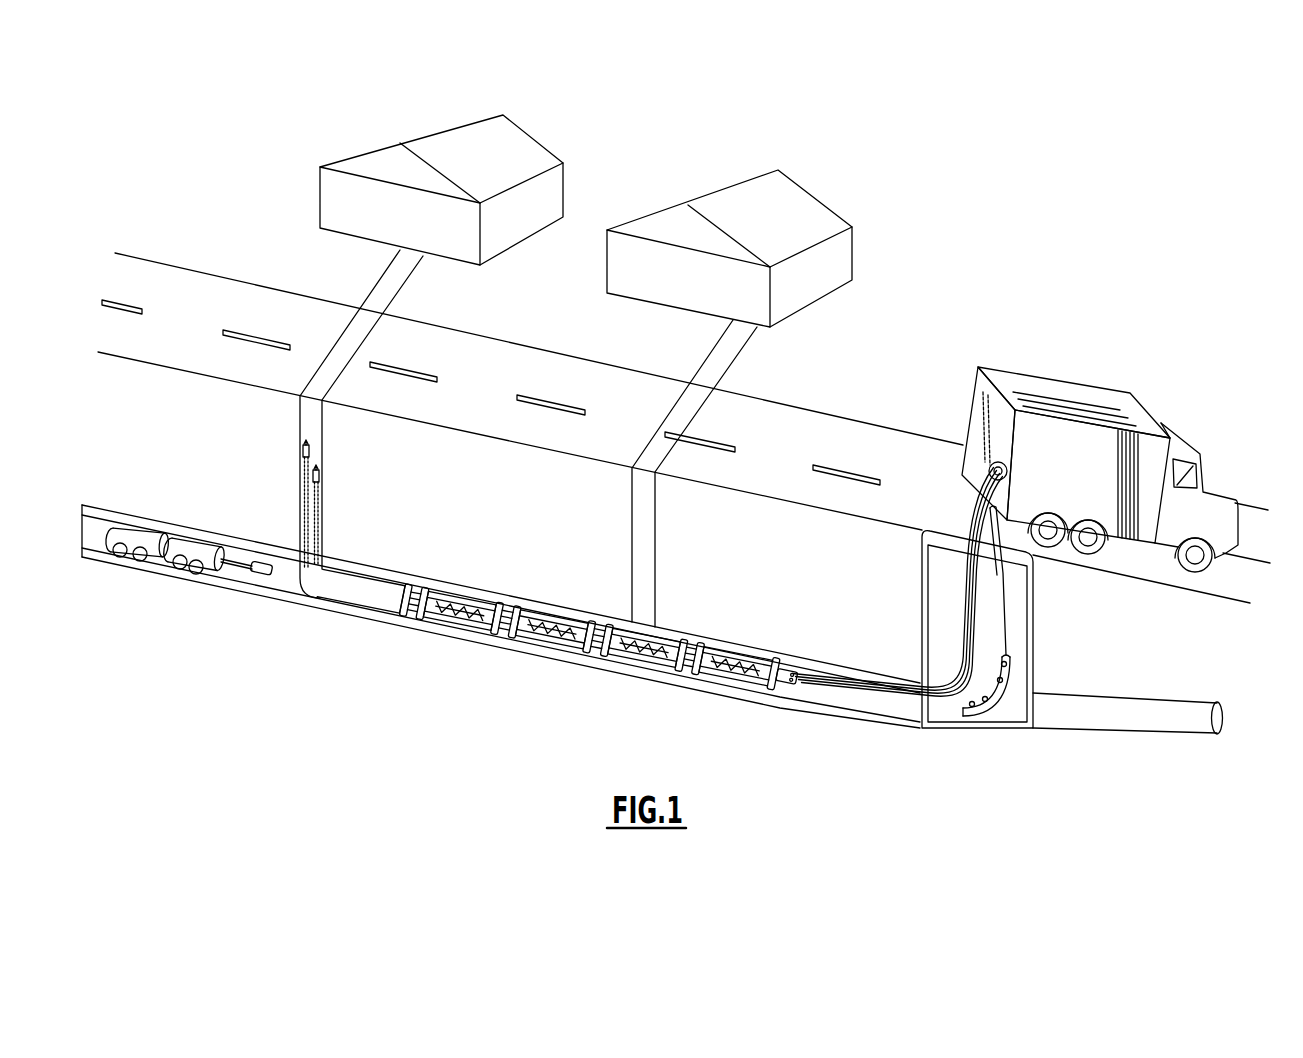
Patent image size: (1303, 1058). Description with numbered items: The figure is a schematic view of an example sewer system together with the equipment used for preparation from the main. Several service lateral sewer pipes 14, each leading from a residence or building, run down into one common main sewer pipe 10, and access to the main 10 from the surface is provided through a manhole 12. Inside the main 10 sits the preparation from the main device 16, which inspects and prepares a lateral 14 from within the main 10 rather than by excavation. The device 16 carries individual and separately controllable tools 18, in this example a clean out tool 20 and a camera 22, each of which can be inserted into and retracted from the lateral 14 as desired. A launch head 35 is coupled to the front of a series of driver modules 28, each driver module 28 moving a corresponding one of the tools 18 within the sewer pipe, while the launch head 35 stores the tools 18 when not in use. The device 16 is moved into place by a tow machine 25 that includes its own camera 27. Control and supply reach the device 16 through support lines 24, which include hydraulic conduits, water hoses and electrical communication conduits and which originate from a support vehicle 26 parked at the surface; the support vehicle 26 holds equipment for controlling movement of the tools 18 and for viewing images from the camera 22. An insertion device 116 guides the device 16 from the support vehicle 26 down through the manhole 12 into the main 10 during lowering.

The main sewer pipe 10 is at (910, 725).
The manhole 12 is at (1022, 674).
The service lateral sewer pipes 14 is at (322, 457).
The preparation from the main (PFM) device 16 is at (502, 654).
The tools 18 is at (281, 489).
The clean out tool 20 is at (303, 451).
The camera 22 is at (320, 483).
The support lines 24 is at (940, 618).
The tow machine 25 is at (180, 548).
The support vehicle 26 is at (1147, 532).
The camera 27 is at (262, 575).
The driver modules 28 is at (450, 624).
The launch head 35 is at (358, 600).
The insertion device 116 is at (992, 709).